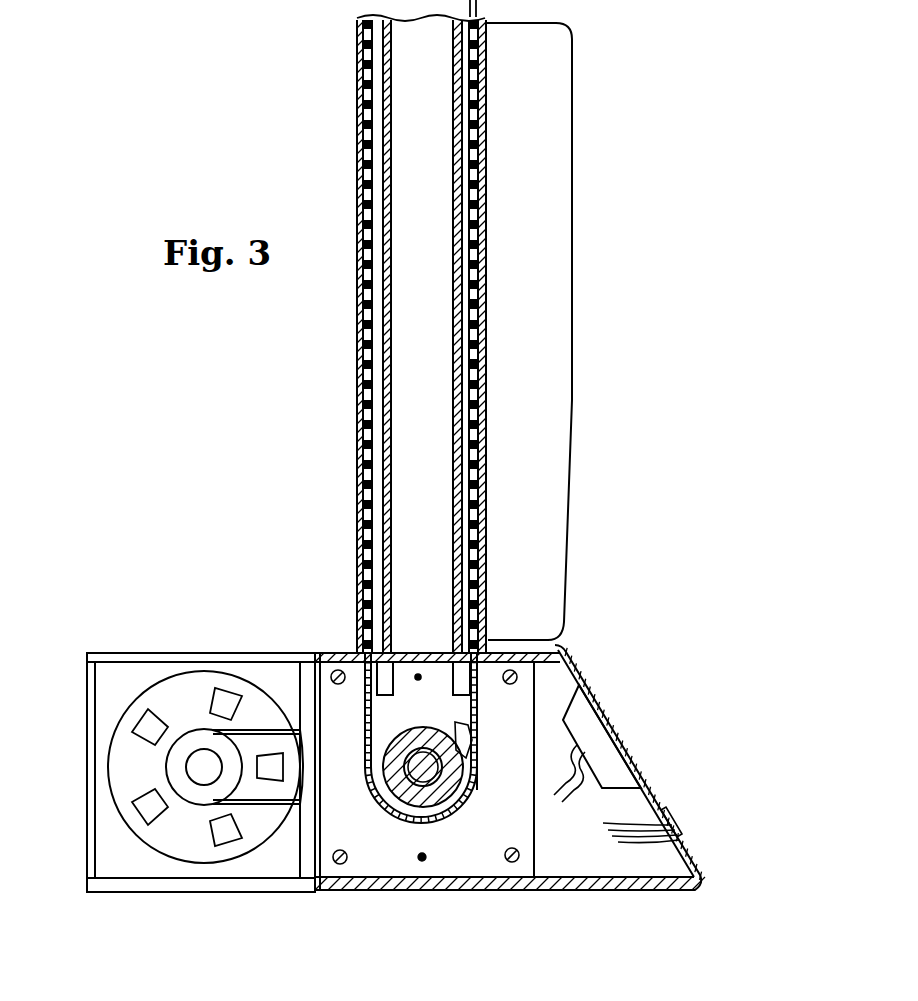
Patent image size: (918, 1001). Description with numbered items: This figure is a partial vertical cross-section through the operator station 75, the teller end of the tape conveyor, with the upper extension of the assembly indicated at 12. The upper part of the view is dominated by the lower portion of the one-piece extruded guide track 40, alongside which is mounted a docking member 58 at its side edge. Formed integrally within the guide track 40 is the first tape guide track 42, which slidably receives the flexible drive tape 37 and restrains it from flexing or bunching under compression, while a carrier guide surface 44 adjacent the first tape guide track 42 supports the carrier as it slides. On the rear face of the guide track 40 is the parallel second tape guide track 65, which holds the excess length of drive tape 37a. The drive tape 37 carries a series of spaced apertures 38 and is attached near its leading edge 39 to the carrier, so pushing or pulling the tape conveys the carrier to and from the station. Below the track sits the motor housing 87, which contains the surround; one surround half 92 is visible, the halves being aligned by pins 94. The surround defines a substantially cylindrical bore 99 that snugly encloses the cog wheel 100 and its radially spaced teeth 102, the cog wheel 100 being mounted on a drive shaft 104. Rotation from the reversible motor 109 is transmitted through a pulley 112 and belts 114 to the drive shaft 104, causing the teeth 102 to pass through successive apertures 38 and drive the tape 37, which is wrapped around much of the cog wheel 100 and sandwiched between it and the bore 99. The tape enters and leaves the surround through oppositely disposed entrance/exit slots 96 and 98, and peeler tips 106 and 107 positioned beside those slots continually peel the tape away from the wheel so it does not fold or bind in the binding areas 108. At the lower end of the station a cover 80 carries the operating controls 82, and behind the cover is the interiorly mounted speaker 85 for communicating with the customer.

The rod 12 is at (440, 8).
The flexible drive tape 37 is at (478, 366).
The excess length of drive tape 37a is at (362, 320).
The spaced apertures 38 is at (472, 330).
The leading edge 39 is at (362, 95).
The guide track 40 is at (488, 137).
The first tape guide track 42 is at (484, 175).
The carrier guide surfaces 44 is at (486, 92).
The docking member 58 is at (548, 243).
The second tape guide track 65 is at (358, 173).
The operator station 75 is at (600, 375).
The cover 80 is at (582, 663).
The operating controls 82 is at (683, 822).
The speaker 85 is at (607, 755).
The motor housing 87 is at (120, 655).
The surround half 92 is at (523, 738).
The pins 94 is at (422, 858).
The entrance/exit slot 96 is at (465, 700).
The entrance/exit slot 98 is at (395, 660).
The cylindrical bore 99 is at (368, 740).
The cog wheel 100 is at (443, 803).
The teeth 102 is at (418, 823).
The drive shaft 104 is at (417, 772).
The peeler tip 106 is at (460, 745).
The peeler tip 107 is at (395, 728).
The binding areas 108 is at (476, 768).
The reversible motor 109 is at (120, 770).
The pulley 112 is at (190, 735).
The belts 114 is at (258, 724).